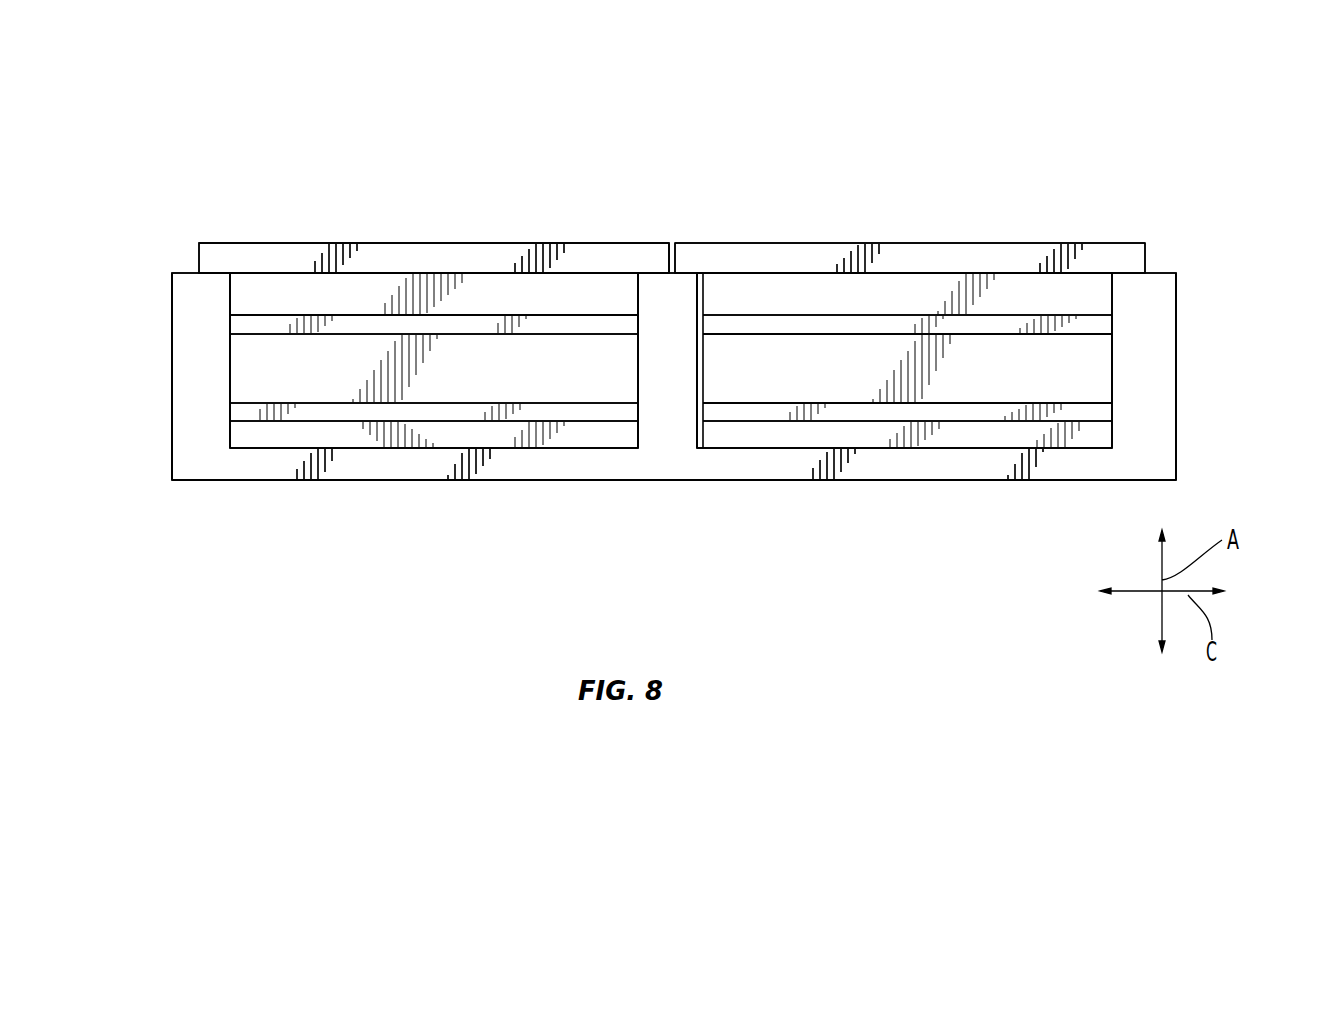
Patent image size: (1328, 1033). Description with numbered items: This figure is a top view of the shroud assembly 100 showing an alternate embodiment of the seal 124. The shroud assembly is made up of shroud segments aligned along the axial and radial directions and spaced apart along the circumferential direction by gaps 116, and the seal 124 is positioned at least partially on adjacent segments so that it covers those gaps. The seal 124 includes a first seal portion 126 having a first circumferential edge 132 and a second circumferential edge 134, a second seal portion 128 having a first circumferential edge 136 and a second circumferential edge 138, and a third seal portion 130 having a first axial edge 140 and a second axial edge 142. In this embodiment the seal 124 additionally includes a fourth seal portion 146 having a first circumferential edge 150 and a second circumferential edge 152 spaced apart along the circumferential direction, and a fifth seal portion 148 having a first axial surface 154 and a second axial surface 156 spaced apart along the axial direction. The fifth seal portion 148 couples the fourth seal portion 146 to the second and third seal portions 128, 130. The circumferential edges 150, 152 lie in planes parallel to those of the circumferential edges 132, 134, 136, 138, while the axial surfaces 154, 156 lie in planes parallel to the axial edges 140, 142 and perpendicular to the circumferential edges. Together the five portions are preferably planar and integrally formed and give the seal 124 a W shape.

The shroud assembly 100 is at (118, 137).
The gap 116 is at (672, 233).
The second seal portion 128 is at (665, 300).
The first circumferential edge 150 is at (1178, 297).
The fourth seal portion 146 is at (1150, 342).
The second circumferential edge 152 is at (1112, 380).
The first circumferential edge 132 is at (172, 302).
The first seal portion 126 is at (192, 365).
The second circumferential edge 134 is at (230, 400).
The seal 124 is at (180, 510).
The first axial edge 140 is at (240, 482).
The second axial edge 142 is at (353, 450).
The third seal portion 130 is at (377, 465).
The second circumferential edge 138 is at (640, 430).
The first circumferential edge 136 is at (693, 428).
The first axial surface 154 is at (795, 480).
The second axial surface 156 is at (953, 450).
The fifth seal portion 148 is at (1012, 465).